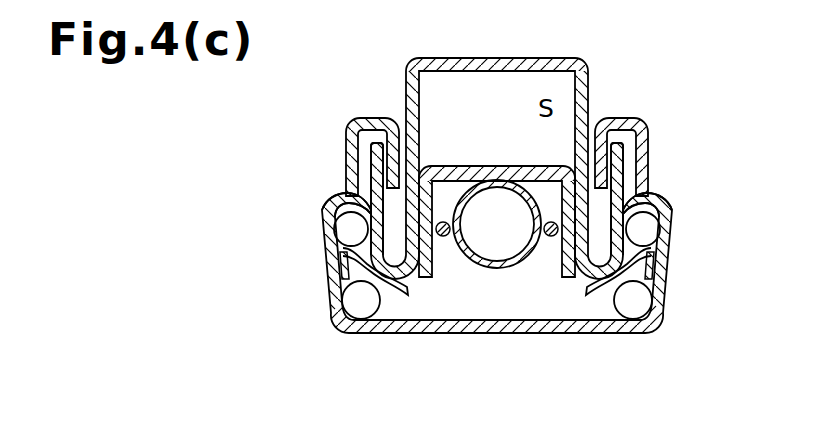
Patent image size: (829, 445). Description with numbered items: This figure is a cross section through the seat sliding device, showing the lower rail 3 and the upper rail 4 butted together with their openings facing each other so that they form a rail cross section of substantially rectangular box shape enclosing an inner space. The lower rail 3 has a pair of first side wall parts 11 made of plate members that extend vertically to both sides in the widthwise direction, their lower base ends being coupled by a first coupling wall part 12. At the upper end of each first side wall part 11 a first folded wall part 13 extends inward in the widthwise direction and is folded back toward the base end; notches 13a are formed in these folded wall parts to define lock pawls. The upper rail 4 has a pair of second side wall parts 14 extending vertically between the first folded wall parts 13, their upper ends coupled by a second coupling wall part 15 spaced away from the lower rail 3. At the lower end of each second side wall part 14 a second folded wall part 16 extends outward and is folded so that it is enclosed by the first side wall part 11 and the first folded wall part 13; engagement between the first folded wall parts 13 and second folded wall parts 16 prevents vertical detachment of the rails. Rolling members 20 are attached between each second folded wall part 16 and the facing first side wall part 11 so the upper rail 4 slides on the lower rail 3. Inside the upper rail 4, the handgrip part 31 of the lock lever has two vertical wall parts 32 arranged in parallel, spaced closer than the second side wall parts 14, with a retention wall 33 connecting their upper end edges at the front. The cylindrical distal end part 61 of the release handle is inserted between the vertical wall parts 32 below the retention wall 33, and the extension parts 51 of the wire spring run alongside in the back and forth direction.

The lower rail 3 is at (498, 254).
The upper rail 4 is at (498, 151).
The first side wall part 11 is at (329, 298).
The first coupling wall part 12 is at (482, 334).
The first folded wall part 13 is at (370, 117).
The notch 13a is at (380, 176).
The second side wall part 14 is at (407, 90).
The second coupling wall part 15 is at (489, 61).
The second folded wall part 16 is at (370, 152).
The rolling member 20 is at (332, 263).
The handgrip part 31 is at (497, 194).
The vertical wall part 32 is at (410, 282).
The retention wall 33 is at (497, 167).
The extension part 51 is at (445, 238).
The distal end part 61 is at (495, 268).